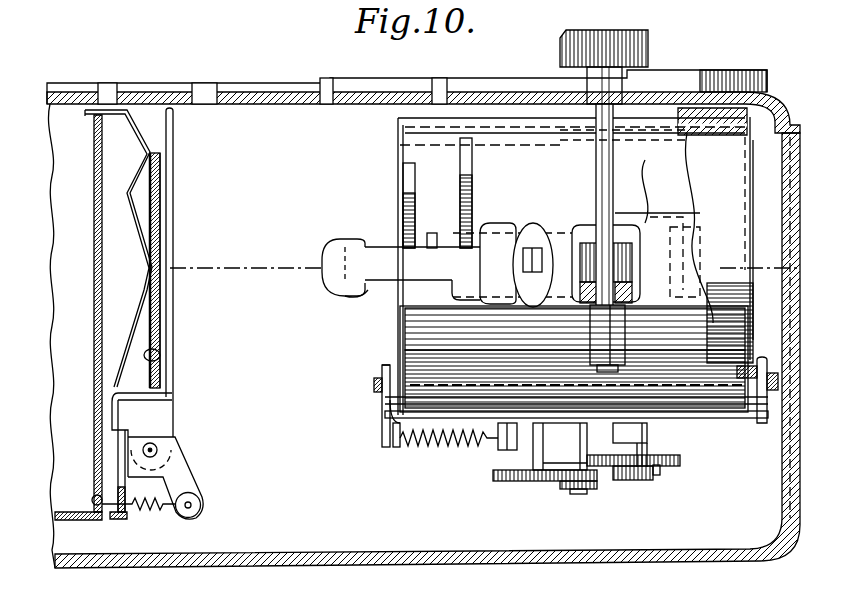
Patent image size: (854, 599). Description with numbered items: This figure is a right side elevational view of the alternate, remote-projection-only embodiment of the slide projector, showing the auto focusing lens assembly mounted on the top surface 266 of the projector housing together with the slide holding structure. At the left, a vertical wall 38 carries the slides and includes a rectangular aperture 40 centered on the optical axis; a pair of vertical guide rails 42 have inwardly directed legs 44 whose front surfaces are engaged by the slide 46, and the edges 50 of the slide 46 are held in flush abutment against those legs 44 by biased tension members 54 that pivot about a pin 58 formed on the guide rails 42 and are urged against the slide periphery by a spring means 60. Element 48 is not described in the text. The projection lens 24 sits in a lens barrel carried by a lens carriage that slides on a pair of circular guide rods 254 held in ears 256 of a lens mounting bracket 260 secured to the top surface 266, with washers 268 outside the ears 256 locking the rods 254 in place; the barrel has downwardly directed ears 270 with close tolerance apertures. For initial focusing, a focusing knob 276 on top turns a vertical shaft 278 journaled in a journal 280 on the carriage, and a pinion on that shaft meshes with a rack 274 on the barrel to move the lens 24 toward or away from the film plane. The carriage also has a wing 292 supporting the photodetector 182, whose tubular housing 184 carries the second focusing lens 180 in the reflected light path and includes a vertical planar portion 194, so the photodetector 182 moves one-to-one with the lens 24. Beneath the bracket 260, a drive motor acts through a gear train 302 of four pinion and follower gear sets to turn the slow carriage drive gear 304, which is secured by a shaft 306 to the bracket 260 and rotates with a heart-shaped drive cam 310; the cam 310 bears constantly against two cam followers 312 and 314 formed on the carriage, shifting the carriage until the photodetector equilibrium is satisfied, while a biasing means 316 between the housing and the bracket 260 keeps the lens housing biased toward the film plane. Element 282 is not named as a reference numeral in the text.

The projection lens 24 is at (655, 208).
The vertical wall 38 is at (97, 426).
The rectangular aperture 40 is at (98, 390).
The vertical guide rails 42 is at (165, 413).
The inwardly directed legs 44 is at (173, 132).
The slide 46 is at (160, 197).
The backing plate 48 is at (160, 253).
The slide edges 50 is at (167, 365).
The biased tension members 54 is at (140, 118).
The pin 58 is at (158, 450).
The spring means 60 is at (145, 512).
The second focusing lens 180 is at (335, 246).
The photodetector 182 is at (497, 283).
The tubular housing 184 is at (483, 263).
The vertical planar portion 194 is at (370, 292).
The circular guide rods 254 is at (430, 375).
The ears 256 is at (386, 415).
The lens mounting bracket 260 is at (705, 420).
The top surface 266 is at (257, 80).
The washer 268 is at (380, 392).
The downwardly directed ears 270 is at (410, 340).
The rack 274 is at (650, 240).
The focusing knob 276 is at (645, 45).
The vertical shaft 278 is at (608, 160).
The journal 280 is at (590, 330).
The collar 282 is at (603, 262).
The wing 292 is at (472, 176).
The gear train 302 is at (666, 474).
The carriage drive gear 304 is at (512, 483).
The shaft 306 is at (579, 491).
The heart-shaped drive cam 310 is at (552, 455).
The cam follower 312 is at (625, 436).
The cam follower 314 is at (505, 448).
The biasing means 316 is at (413, 448).